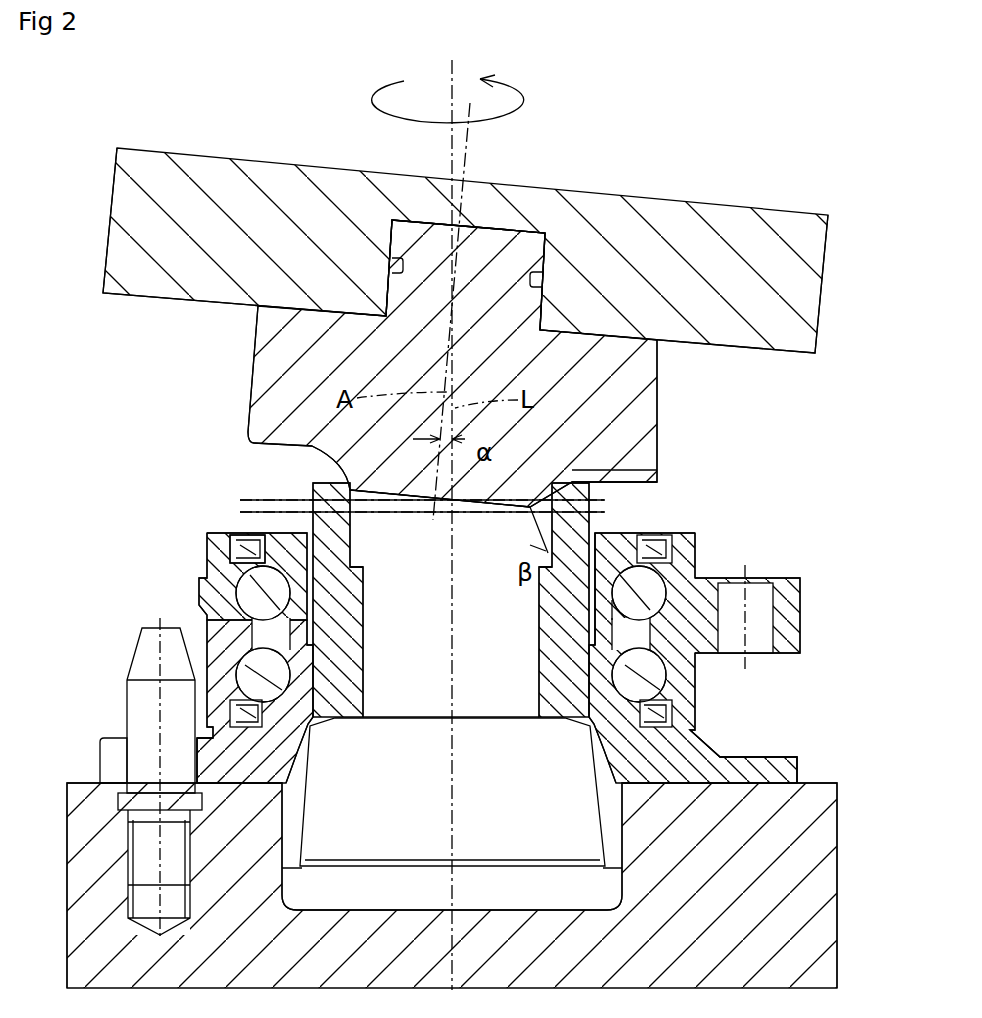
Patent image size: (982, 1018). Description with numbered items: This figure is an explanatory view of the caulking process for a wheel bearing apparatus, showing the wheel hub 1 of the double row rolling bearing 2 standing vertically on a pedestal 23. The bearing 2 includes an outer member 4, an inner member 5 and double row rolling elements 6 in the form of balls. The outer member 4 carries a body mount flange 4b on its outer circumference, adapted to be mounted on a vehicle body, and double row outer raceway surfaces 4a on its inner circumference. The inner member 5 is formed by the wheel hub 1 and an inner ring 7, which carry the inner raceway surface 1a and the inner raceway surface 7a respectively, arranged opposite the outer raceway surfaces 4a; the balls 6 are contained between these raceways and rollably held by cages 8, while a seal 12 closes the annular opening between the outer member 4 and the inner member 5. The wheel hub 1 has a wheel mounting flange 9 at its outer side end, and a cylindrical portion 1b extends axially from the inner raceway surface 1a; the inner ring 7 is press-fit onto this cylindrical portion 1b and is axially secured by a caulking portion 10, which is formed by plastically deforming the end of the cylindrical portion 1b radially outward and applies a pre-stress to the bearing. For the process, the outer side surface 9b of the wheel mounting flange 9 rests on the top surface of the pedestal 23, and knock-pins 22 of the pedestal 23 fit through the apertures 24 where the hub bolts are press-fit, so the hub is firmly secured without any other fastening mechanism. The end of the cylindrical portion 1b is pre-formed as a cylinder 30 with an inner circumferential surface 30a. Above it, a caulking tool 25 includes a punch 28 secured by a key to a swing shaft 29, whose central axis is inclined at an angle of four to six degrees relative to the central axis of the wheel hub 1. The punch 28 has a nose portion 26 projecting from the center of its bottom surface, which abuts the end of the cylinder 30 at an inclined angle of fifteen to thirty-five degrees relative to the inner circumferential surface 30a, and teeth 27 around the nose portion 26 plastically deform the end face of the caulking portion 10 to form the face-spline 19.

The wheel hub 1 is at (575, 693).
The inner raceway surface 1a is at (627, 675).
The cylindrical portion 1b is at (280, 613).
The double row rolling bearing 2 is at (112, 577).
The outer member 4 is at (222, 600).
The outer raceway surfaces 4a is at (237, 567).
The body mount flange 4b is at (787, 613).
The inner member 5 is at (335, 767).
The rolling elements (balls) 6 is at (712, 655).
The inner ring 7 is at (610, 582).
The inner raceway surface 7a is at (627, 605).
The cages 8 is at (290, 650).
The wheel mounting flange 9 is at (110, 762).
The outer side surface 9b is at (803, 812).
The caulking portion 10 is at (295, 520).
The seal 12 is at (687, 537).
The face-spline 19 is at (297, 503).
The knock-pins 22 is at (118, 798).
The pedestal 23 is at (118, 942).
The apertures 24 is at (125, 757).
The caulking tool 25 is at (782, 394).
The nose portion 26 is at (485, 492).
The teeth 27 is at (660, 482).
The punch 28 is at (655, 400).
The swing shaft 29 is at (735, 313).
The cylinder 30 is at (356, 494).
The inner circumferential surface 30a is at (388, 568).